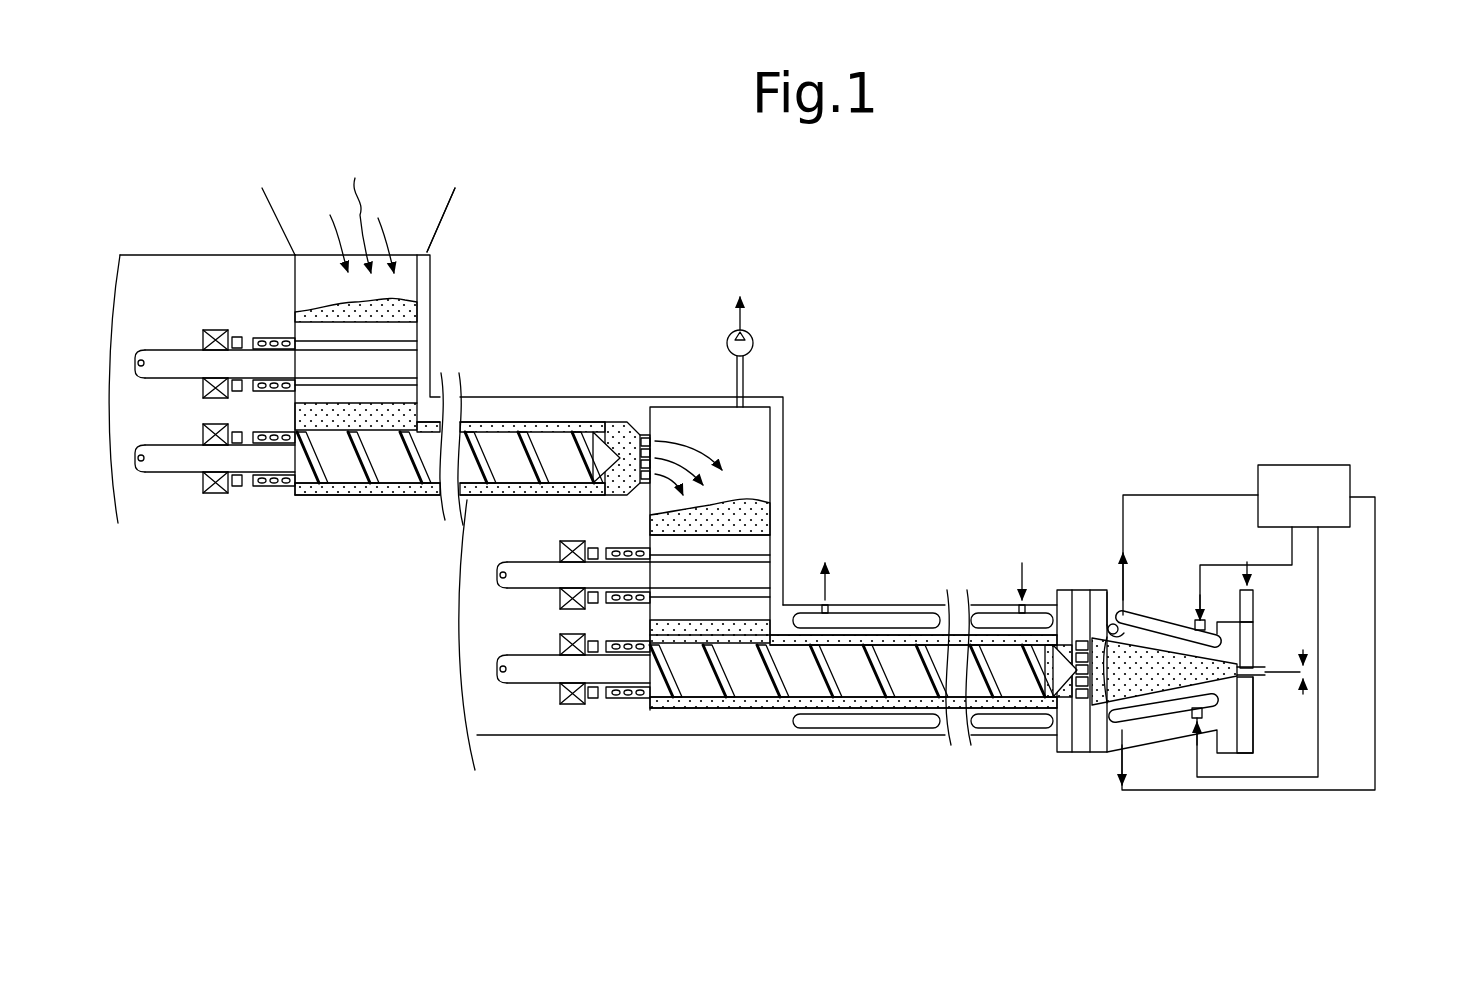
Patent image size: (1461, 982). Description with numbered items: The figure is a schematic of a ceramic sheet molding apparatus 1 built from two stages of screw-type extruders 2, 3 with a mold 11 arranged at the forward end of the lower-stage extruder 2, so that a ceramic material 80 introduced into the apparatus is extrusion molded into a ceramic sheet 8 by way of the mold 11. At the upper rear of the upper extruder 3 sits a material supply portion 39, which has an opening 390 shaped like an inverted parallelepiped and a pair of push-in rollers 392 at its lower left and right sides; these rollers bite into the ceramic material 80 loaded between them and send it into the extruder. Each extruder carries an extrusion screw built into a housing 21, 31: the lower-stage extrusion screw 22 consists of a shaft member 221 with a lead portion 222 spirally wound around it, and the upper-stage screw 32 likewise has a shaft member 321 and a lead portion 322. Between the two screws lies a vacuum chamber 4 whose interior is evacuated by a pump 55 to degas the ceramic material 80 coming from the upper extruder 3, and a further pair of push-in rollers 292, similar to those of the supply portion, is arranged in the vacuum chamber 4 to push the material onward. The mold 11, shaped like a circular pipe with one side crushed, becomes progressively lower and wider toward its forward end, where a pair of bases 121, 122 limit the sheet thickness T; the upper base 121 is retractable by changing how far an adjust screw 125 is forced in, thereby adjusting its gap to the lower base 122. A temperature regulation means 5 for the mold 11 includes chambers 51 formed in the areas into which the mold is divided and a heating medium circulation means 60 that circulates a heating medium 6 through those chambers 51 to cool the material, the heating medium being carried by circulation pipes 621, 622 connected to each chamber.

The ceramic sheet molding apparatus 1 is at (1012, 349).
The screw-type extruder 2 is at (823, 740).
The screw-type extruder 3 is at (512, 383).
The vacuum chamber 4 is at (756, 440).
The temperature regulation means 5 is at (1273, 624).
The heating medium 6 is at (1244, 675).
The ceramic sheet 8 is at (1247, 633).
The mold 11 is at (1153, 735).
The housing 21 is at (777, 722).
The extrusion screw 22 is at (792, 734).
The housing 31 is at (600, 400).
The screw of first extruder 32 is at (369, 512).
The material supply portion 39 is at (280, 243).
The chamber 51 is at (1110, 618).
The pump 55 is at (754, 349).
The heating medium circulation means 60 is at (1320, 470).
The ceramic material 80 is at (1095, 815).
The upper base 121 is at (1253, 637).
The lower base 122 is at (1240, 713).
The adjust screw 125 is at (1247, 580).
The shaft member 221 is at (752, 683).
The lead portion 222 is at (714, 678).
The push-in rollers 292 is at (756, 580).
The shaft member 321 is at (404, 466).
The lead portion 322 is at (313, 478).
The opening 390 is at (440, 200).
The push-in rollers 392 is at (405, 350).
The circulation pipe 621 is at (1230, 565).
The circulation pipe 622 is at (1147, 492).
The thickness T is at (1300, 672).